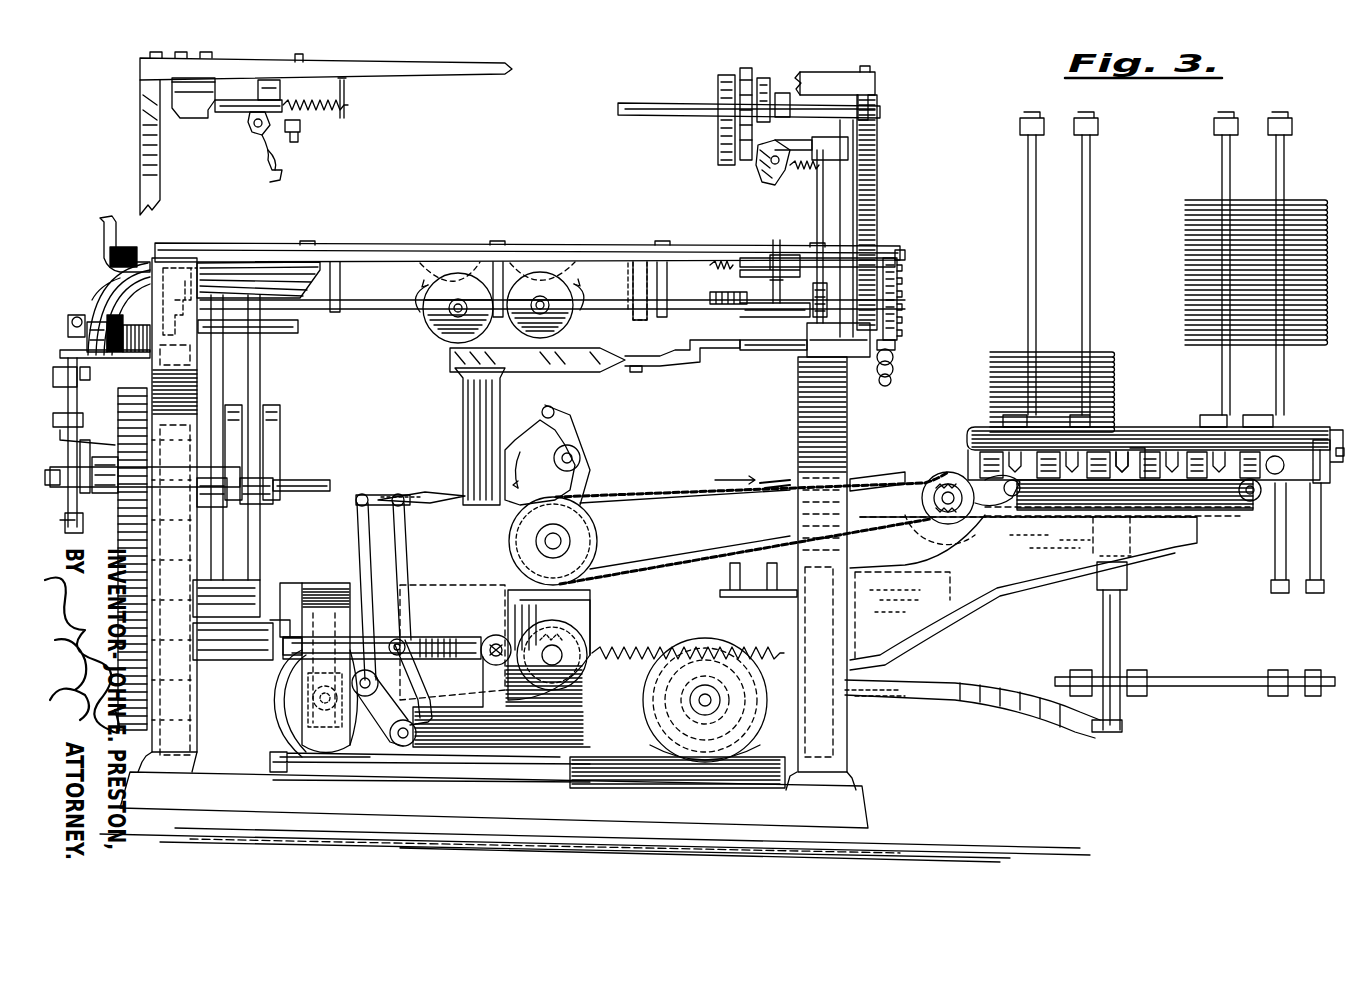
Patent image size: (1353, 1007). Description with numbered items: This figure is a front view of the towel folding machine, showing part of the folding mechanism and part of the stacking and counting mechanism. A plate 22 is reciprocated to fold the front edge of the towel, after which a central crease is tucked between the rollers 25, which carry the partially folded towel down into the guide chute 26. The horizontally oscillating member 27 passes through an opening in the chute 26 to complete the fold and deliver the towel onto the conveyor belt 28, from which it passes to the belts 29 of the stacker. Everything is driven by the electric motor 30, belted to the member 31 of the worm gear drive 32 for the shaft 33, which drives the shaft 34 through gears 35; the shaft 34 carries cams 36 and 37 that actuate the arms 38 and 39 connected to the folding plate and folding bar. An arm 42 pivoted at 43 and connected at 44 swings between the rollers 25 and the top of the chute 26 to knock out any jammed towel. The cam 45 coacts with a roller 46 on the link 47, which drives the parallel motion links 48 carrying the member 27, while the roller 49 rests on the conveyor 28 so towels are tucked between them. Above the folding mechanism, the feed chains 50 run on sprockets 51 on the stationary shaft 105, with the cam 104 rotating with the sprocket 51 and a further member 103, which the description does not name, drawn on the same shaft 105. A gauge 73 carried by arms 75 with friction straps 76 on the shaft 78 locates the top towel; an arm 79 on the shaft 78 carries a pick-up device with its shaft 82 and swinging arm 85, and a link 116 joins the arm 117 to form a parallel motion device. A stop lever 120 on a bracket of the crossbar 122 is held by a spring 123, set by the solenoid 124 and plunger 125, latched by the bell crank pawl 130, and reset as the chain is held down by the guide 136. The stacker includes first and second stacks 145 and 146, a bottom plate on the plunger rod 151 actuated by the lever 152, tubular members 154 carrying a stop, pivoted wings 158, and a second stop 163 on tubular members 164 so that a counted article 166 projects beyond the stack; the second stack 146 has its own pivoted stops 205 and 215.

The plate 22 is at (425, 246).
The rollers 25 is at (432, 328).
The guide chute 26 is at (464, 400).
The horizontally oscillating member 27 is at (425, 492).
The conveyor belt 28 is at (895, 474).
The belts 29 is at (985, 514).
The electric motor 30 is at (688, 700).
The member of worm gear drive 31 is at (285, 712).
The worm gear drive 32 is at (325, 600).
The shaft 33 is at (280, 635).
The shaft 34 is at (300, 480).
The gears 35 is at (143, 515).
The cam 36 is at (285, 484).
The cam 37 is at (240, 498).
The arm 38 is at (260, 385).
The arm 39 is at (225, 368).
The arm 42 is at (572, 362).
The pivot 43 is at (634, 372).
The connection 44 is at (740, 348).
The cam 45 is at (572, 622).
The roller 46 is at (486, 640).
The link 47 is at (438, 662).
The parallel motion links 48 is at (400, 568).
The roller 49 is at (580, 458).
The feed chains 50 is at (292, 53).
The sprocket 51 is at (746, 68).
The gauge 73 is at (782, 258).
The arms 75 is at (903, 280).
The strap 76 is at (895, 362).
The shaft 78 is at (778, 352).
The arm 79 is at (878, 190).
The shaft 82 is at (805, 165).
The swinging arm 85 is at (760, 170).
The gear 103 is at (720, 85).
The cam 104 is at (766, 80).
The stationary shaft 105 is at (640, 105).
The link 116 is at (826, 235).
The arm 117 is at (830, 345).
The stop lever 120 is at (282, 175).
The crossbar 122 is at (830, 75).
The spring 123 is at (325, 115).
The solenoid 124 is at (182, 128).
The plunger 125 is at (232, 113).
The bell crank pawl 130 is at (250, 130).
The guide 136 is at (300, 135).
The first stack 145 is at (1246, 269).
The second stack 146 is at (1050, 269).
The plunger rod 151 is at (1121, 615).
The lever 152 is at (1118, 732).
The tubular members 154 is at (1273, 525).
The wing 158 is at (1172, 440).
The second stop 163 is at (1338, 430).
The tubular members 164 is at (1310, 530).
The article 166 is at (1195, 340).
The stop plates 205 is at (1120, 452).
The stops 215 is at (1138, 480).